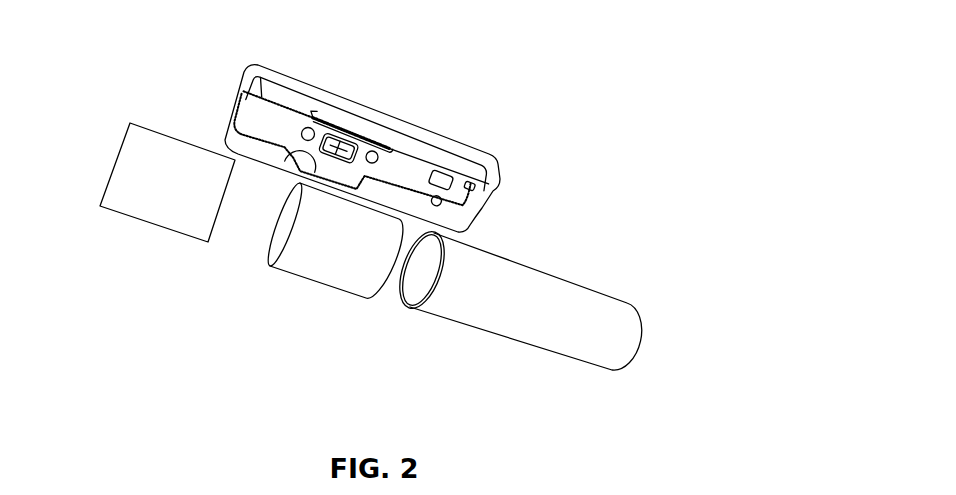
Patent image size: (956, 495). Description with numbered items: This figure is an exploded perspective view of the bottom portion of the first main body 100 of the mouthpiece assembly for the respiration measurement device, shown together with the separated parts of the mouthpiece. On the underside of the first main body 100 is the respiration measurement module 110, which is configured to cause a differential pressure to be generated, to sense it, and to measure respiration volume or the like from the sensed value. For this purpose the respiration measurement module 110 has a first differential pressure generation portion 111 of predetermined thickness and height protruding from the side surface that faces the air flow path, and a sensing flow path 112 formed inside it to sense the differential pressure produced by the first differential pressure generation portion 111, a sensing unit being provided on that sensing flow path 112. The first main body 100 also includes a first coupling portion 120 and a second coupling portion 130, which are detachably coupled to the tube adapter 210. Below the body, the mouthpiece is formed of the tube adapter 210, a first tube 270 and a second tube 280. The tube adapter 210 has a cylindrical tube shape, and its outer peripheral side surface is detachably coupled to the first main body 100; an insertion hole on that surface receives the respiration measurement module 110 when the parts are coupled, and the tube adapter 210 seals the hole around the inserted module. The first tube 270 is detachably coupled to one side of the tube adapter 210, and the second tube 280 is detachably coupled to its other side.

The first main body 100 is at (461, 147).
The respiration measurement module 110 is at (335, 138).
The first differential pressure generation portion 111 is at (298, 154).
The sensing flow path 112 is at (346, 151).
The first coupling portion 120 is at (308, 127).
The second coupling portion 130 is at (373, 151).
The tube adapter 210 is at (322, 292).
The first tube 270 is at (166, 243).
The second tube 280 is at (487, 347).